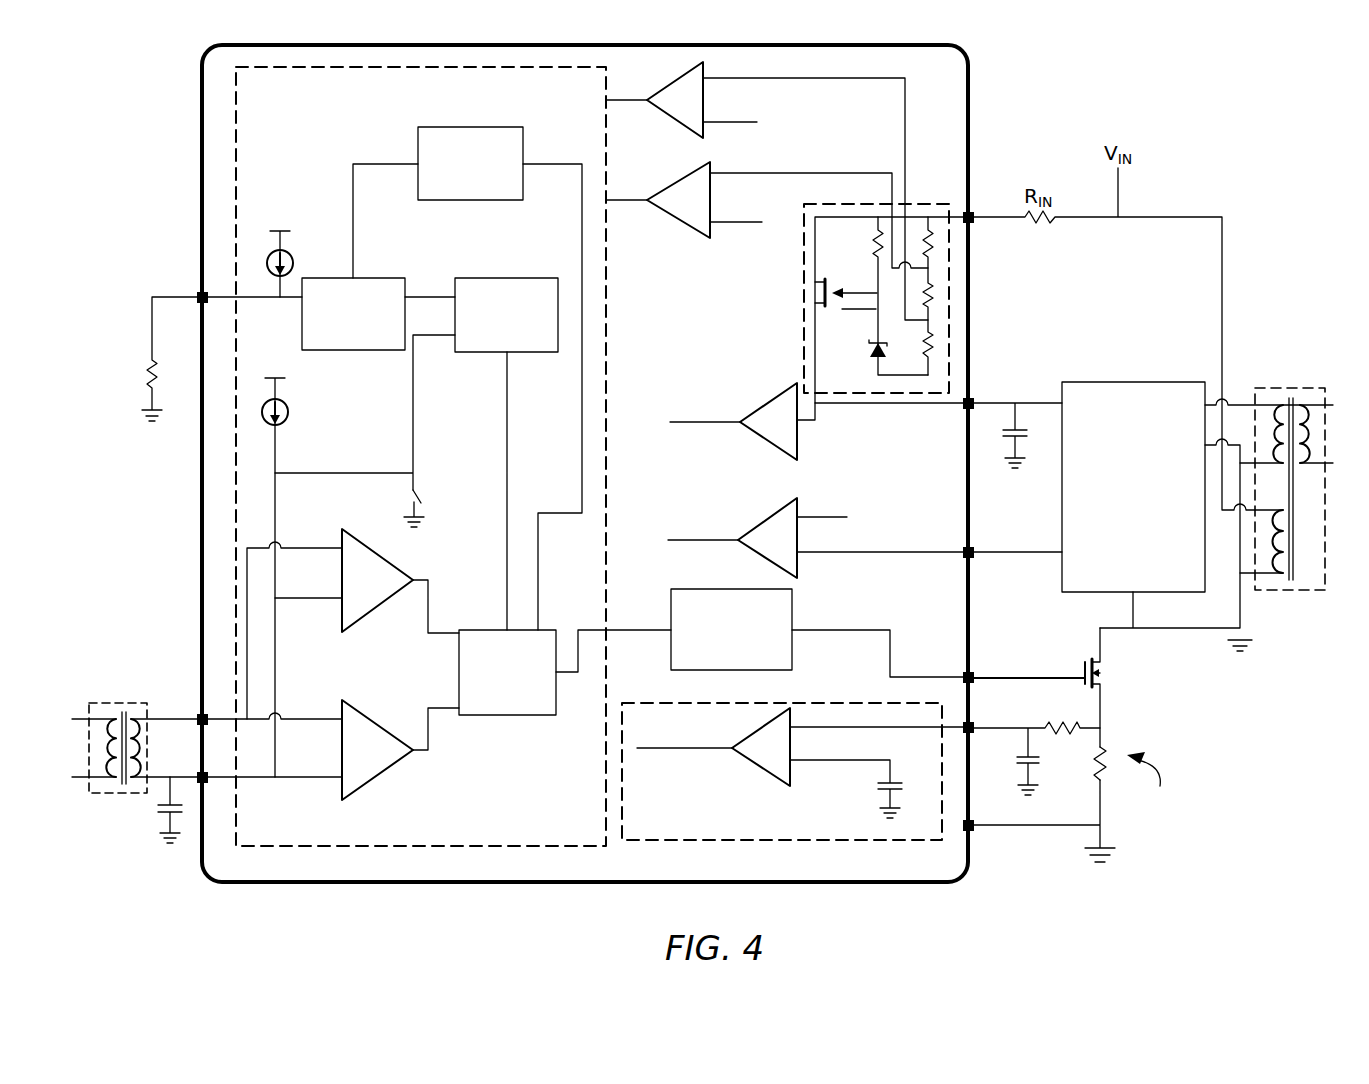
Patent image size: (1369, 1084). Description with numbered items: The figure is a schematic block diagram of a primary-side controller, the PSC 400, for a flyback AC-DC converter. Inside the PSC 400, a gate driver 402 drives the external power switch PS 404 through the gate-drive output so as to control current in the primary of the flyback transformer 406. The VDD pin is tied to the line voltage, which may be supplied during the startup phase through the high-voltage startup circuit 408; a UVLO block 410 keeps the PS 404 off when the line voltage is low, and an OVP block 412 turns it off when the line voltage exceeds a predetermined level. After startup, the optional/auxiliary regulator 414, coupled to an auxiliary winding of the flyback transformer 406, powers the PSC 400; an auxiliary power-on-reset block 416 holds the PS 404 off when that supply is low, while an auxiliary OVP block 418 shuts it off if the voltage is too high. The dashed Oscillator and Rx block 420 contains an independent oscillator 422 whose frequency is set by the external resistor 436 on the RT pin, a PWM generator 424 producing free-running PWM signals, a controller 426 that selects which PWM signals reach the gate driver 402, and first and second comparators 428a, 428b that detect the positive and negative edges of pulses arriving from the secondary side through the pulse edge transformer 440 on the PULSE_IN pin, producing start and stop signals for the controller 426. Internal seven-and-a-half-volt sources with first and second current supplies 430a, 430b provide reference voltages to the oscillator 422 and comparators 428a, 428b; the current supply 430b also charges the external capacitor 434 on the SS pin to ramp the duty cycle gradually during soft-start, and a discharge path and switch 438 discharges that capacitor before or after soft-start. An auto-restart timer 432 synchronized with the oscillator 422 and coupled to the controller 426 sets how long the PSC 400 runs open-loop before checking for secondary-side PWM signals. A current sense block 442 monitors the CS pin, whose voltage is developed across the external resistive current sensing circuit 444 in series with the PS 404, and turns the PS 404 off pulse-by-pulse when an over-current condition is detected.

The primary-side controller (PSC) 400 is at (968, 88).
The gate driver 402 is at (793, 602).
The power switch (PS) 404 is at (1102, 672).
The flyback transformer 406 is at (1289, 388).
The high-voltage (HV) startup circuit 408 is at (932, 204).
The UVLO block 410 is at (655, 194).
The OVP block 412 is at (655, 98).
The optional/auxiliary regulator 414 is at (1197, 516).
The auxiliary power on reset (POR) block 416 is at (760, 402).
The auxiliary OVP block 418 is at (758, 520).
The Oscillator and Receiver (Rx) block 420 is at (421, 456).
The oscillator 422 is at (388, 278).
The pulse width modulation (PWM) generator 424 is at (505, 278).
The controller 426 is at (512, 715).
The first comparator 428a is at (353, 624).
The second comparator 428b is at (330, 750).
The first current supply 430a is at (292, 266).
The second current supply 430b is at (288, 412).
The auto-restart timer 432 is at (418, 140).
The external capacitor 434 is at (160, 805).
The external resistor 436 is at (148, 373).
The discharge path and switch 438 is at (453, 515).
The pulse edge transformer (PET) 440 is at (116, 703).
The current sense block 442 is at (795, 771).
The external resistive current sensing (RCS) circuit 444 is at (1136, 779).